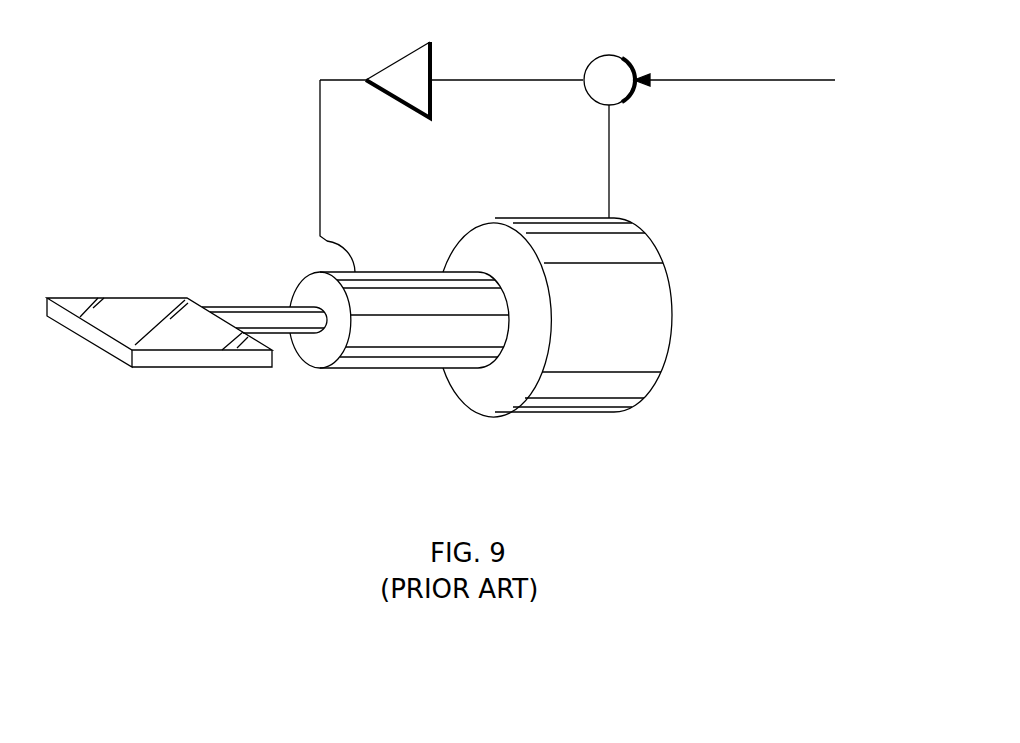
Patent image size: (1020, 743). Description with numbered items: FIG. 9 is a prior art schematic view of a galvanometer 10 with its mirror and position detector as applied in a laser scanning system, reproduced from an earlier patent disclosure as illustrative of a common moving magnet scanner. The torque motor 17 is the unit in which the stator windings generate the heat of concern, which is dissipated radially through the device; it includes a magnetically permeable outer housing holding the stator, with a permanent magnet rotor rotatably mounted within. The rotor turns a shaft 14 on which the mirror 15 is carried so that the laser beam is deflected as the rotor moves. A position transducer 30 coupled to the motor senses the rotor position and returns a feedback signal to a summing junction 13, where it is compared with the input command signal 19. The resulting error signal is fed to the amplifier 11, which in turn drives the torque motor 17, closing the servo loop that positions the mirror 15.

The galvanometer 10 is at (203, 137).
The amplifier 11 is at (403, 56).
The summing junction 13 is at (608, 55).
The shaft 14 is at (229, 306).
The mirror 15 is at (80, 298).
The torque motor 17 is at (385, 368).
The input signal 19 is at (867, 92).
The position transducer 30 is at (672, 305).